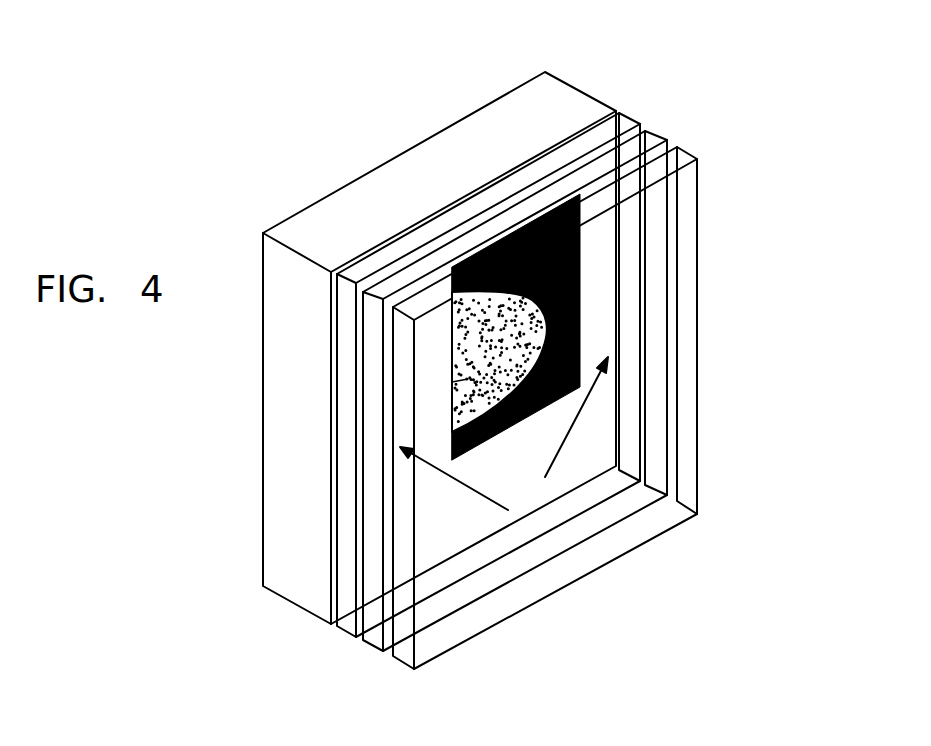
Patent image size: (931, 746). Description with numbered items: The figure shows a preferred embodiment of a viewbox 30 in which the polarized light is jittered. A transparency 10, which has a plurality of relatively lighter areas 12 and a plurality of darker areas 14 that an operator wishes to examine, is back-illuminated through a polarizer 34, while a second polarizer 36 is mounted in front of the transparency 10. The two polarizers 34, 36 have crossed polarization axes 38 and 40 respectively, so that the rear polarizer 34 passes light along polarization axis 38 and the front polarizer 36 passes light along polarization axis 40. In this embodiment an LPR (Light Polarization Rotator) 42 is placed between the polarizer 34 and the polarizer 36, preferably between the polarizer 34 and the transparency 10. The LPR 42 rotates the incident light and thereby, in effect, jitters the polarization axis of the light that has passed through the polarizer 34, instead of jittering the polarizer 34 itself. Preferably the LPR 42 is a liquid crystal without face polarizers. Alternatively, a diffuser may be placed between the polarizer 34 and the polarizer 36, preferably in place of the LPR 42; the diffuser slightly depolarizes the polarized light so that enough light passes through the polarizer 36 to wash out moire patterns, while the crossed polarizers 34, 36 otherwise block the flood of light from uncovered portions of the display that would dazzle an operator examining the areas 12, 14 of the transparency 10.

The transparency 10 is at (515, 163).
The lighter areas 12 is at (432, 313).
The darker areas 14 is at (575, 262).
The viewbox 30 is at (281, 609).
The polarizer 34 is at (347, 624).
The polarizer 36 is at (686, 328).
The polarization axis 38 is at (435, 470).
The polarization axis 40 is at (580, 413).
The LPR (Light Polarization Rotator) 42 is at (640, 502).